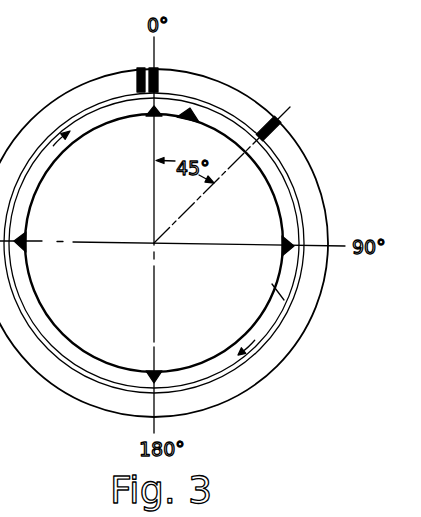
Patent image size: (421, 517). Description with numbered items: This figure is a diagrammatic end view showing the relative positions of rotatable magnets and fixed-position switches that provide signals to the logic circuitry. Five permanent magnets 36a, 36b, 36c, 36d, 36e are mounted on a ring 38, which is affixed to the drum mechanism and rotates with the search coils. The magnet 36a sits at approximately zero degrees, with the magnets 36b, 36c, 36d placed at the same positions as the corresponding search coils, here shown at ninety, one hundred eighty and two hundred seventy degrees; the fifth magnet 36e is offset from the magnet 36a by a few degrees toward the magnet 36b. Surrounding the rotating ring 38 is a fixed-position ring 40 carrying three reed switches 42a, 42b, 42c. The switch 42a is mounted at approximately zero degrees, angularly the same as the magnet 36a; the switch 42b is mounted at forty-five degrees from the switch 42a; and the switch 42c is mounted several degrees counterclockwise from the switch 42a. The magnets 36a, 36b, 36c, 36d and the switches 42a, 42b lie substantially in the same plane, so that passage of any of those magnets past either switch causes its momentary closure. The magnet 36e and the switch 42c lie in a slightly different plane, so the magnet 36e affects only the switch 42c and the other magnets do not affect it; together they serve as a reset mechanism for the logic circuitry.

The permanent magnet 36a is at (152, 119).
The permanent magnet 36b is at (281, 249).
The permanent magnet 36c is at (158, 371).
The permanent magnet 36d is at (27, 237).
The fifth magnet 36e is at (178, 122).
The ring 38 is at (58, 158).
The fixed-position ring 40 is at (238, 91).
The reed switch 42a is at (157, 67).
The reed switch 42b is at (279, 123).
The reed switch 42c is at (141, 67).